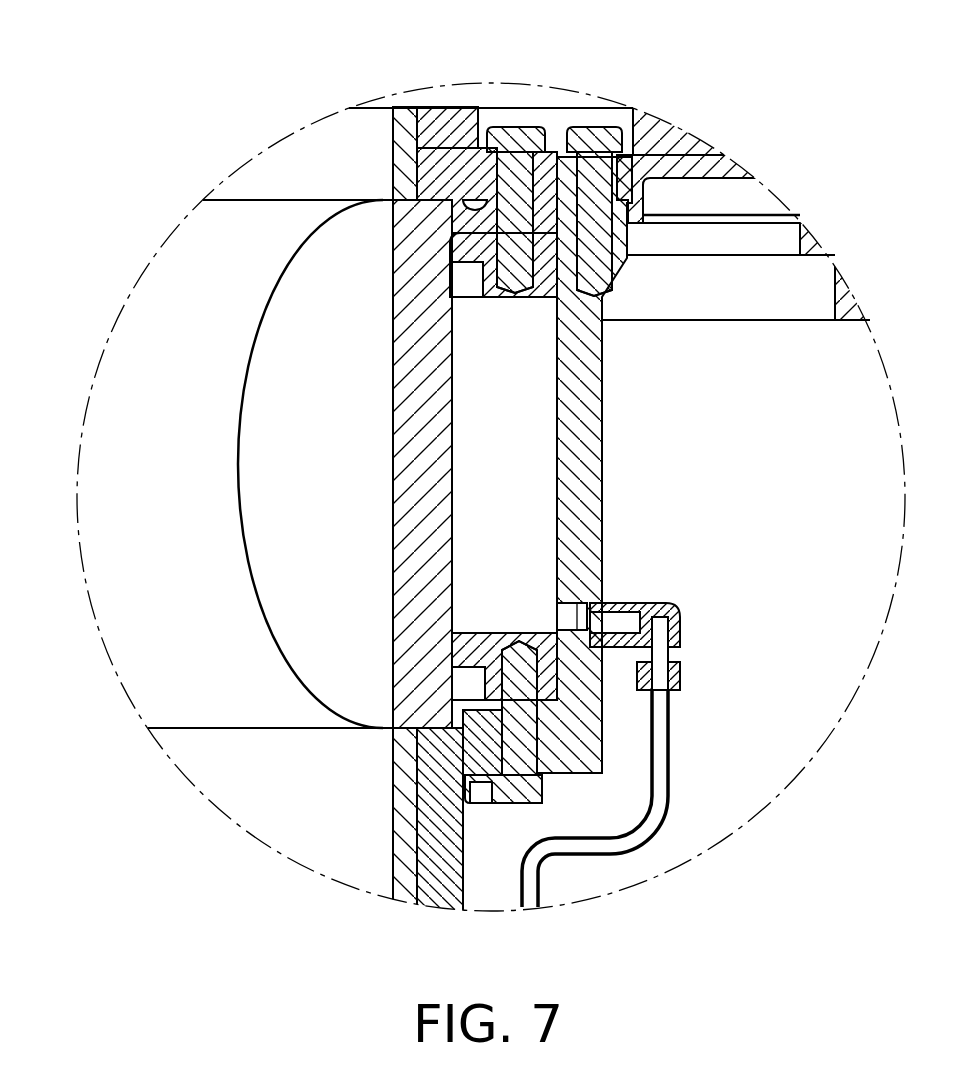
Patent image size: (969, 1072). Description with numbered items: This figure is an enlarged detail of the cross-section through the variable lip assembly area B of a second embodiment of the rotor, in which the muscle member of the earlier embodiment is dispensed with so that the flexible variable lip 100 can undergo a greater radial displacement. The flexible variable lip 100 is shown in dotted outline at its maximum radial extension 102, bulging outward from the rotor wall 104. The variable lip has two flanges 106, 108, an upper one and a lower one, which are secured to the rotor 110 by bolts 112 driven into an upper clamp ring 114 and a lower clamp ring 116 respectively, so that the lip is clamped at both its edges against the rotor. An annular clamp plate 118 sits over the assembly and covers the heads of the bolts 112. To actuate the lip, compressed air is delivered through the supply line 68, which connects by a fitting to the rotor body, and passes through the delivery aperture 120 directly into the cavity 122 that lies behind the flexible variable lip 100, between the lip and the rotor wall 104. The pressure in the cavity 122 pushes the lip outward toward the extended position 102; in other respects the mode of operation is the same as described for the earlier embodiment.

The supply line 68 is at (640, 853).
The flexible variable lip 100 is at (390, 315).
The maximum radial extension of the flexible variable lip 102 is at (333, 220).
The rotor wall 104 is at (392, 798).
The flange 106 is at (485, 191).
The flange 108 is at (432, 900).
The rotor 110 is at (430, 905).
The bolts 112 is at (518, 130).
The upper clamp ring 114 is at (567, 243).
The lower clamp ring 116 is at (603, 648).
The annular clamp plate 118 is at (553, 106).
The delivery aperture 120 is at (603, 667).
The cavity 122 is at (493, 505).
The variable lip assembly area B is at (88, 404).